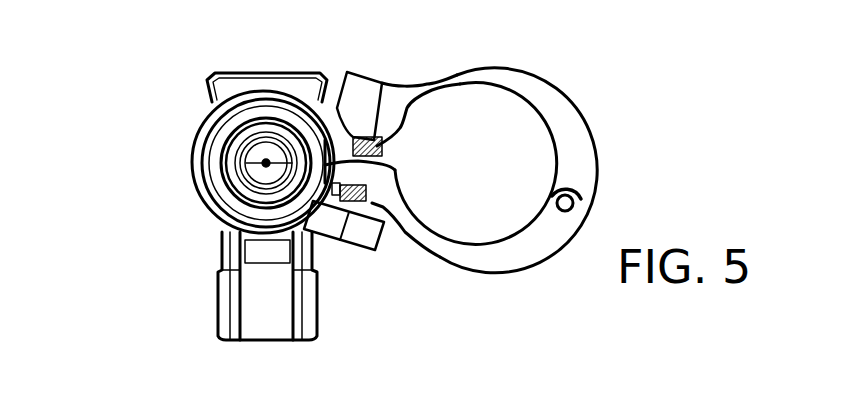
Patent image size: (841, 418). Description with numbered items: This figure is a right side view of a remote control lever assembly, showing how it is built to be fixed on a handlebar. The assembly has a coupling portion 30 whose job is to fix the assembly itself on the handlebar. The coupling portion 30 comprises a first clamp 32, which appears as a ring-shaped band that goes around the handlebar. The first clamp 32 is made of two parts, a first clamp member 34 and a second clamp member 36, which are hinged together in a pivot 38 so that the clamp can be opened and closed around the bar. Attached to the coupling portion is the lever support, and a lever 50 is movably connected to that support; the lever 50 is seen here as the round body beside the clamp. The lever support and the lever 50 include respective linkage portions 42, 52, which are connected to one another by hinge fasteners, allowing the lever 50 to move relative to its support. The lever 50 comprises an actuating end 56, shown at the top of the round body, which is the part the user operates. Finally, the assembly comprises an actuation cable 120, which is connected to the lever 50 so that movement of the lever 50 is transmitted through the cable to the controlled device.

The coupling portion 30 is at (503, 174).
The first clamp 32 is at (424, 128).
The first clamp member 34 is at (498, 257).
The second clamp member 36 is at (505, 78).
The pivot 38 is at (573, 210).
The lever 50 is at (198, 116).
The actuating end 56 is at (258, 72).
The actuation cable 120 is at (265, 165).
The linkage portion 42 is at (223, 330).
The linkage portion 52 is at (272, 330).